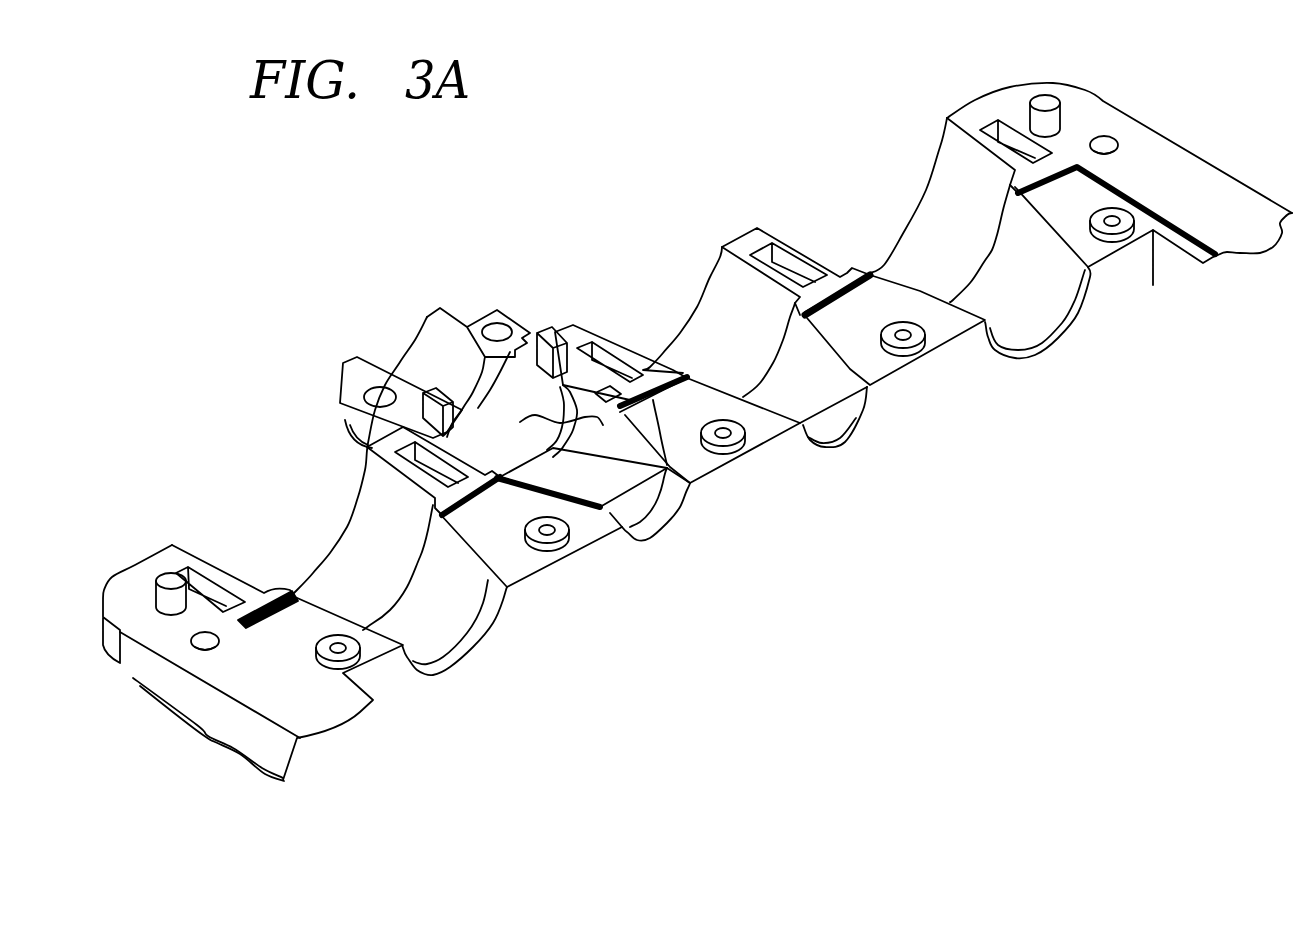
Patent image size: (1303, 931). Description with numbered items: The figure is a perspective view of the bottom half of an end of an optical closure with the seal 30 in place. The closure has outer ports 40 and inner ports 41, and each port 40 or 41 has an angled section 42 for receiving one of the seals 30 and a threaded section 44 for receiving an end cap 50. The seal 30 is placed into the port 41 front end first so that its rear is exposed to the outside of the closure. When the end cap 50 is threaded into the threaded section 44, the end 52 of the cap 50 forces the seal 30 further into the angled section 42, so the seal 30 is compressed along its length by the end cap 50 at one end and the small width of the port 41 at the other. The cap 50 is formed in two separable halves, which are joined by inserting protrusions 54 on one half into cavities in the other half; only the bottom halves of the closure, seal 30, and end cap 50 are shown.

The seal 30 is at (600, 507).
The outer port 40 is at (287, 508).
The inner port 41 is at (640, 318).
The angled section 42 is at (1037, 290).
The threaded section 44 is at (975, 229).
The end cap 50 is at (430, 362).
The end of the cap 52 is at (522, 452).
The protrusions 54 is at (540, 328).